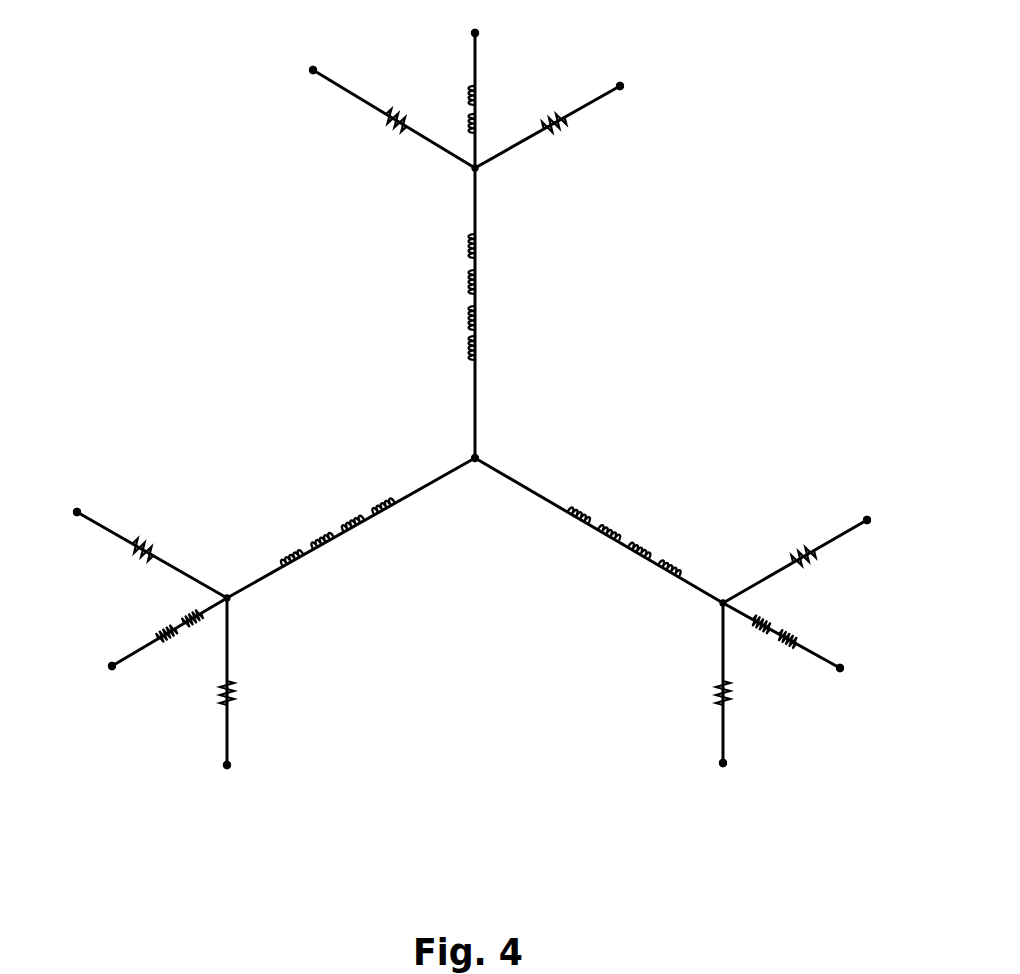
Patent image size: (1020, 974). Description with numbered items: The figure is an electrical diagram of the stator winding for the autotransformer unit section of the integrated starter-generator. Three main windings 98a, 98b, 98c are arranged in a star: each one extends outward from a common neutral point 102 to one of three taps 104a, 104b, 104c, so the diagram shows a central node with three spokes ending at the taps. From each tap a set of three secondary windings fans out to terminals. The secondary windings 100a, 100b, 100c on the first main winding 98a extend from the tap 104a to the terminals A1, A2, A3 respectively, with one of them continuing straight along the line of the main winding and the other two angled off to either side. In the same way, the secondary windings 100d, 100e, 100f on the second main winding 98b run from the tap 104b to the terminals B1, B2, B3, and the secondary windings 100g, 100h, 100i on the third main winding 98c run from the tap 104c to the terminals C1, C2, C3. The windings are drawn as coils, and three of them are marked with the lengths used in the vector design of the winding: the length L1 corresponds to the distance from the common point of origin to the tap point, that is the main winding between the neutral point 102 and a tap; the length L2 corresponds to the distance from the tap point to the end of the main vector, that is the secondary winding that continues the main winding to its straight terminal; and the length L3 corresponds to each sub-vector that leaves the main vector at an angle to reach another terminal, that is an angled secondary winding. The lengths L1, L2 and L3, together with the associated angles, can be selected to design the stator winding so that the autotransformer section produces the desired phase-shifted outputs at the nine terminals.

The first main winding 98a is at (478, 292).
The second main winding 98b is at (612, 549).
The third main winding 98c is at (340, 537).
The secondary winding 100a is at (474, 55).
The secondary winding 100b is at (582, 103).
The secondary winding 100c is at (436, 148).
The secondary winding 100d is at (810, 648).
The secondary winding 100e is at (722, 668).
The secondary winding 100f is at (830, 540).
The secondary winding 100g is at (138, 641).
The secondary winding 100h is at (100, 522).
The secondary winding 100i is at (225, 722).
The common neutral point 102 is at (478, 457).
The tap 104a is at (478, 170).
The tap 104b is at (723, 602).
The tap 104c is at (227, 597).
The length L1 is at (452, 297).
The length L2 is at (493, 109).
The length L3 is at (387, 139).
The terminal A1 is at (477, 20).
The terminal A2 is at (640, 99).
The terminal A3 is at (327, 101).
The terminal B1 is at (850, 683).
The terminal B2 is at (721, 784).
The terminal B3 is at (888, 511).
The terminal C1 is at (101, 679).
The terminal C2 is at (63, 505).
The terminal C3 is at (240, 782).